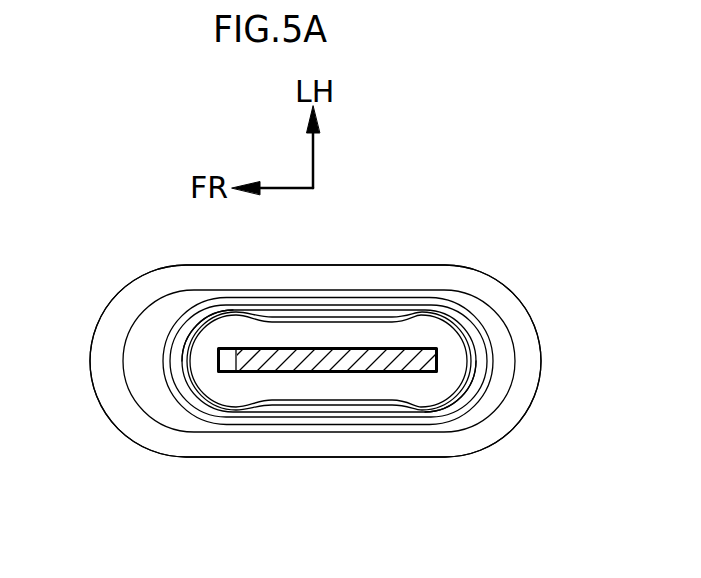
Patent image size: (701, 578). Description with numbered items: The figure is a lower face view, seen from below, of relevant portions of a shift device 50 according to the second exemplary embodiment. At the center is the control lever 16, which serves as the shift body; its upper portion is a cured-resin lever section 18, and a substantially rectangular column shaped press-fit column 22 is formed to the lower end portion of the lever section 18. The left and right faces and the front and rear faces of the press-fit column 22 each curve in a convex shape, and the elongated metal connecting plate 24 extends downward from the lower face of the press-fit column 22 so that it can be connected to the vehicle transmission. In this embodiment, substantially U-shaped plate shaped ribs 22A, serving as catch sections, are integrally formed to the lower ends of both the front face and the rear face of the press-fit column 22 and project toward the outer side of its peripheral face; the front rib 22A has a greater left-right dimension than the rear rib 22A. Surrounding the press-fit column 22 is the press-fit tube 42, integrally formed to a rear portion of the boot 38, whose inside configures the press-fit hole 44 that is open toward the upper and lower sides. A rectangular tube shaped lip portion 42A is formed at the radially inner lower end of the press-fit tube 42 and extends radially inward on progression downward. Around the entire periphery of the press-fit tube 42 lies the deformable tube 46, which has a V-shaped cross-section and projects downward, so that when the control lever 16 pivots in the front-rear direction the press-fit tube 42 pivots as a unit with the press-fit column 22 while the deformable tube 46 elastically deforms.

The control lever 16 is at (387, 320).
The lever section 18 is at (329, 313).
The press-fit column 22 is at (302, 320).
The ribs 22A is at (473, 350).
The connecting plate 24 is at (313, 378).
The boot 38 is at (457, 225).
The press-fit tube 42 is at (247, 306).
The lip portion 42A is at (273, 408).
The press-fit hole 44 is at (358, 392).
The deformable tube 46 is at (147, 346).
The shift device 50 is at (95, 172).